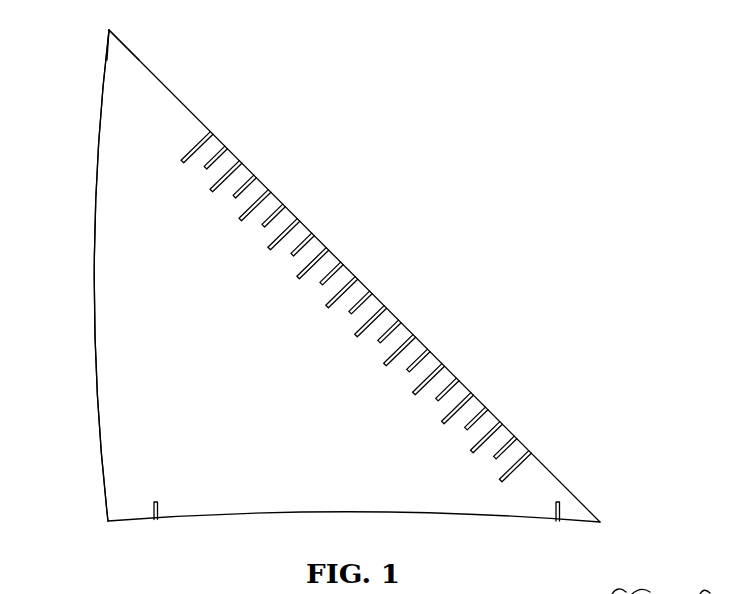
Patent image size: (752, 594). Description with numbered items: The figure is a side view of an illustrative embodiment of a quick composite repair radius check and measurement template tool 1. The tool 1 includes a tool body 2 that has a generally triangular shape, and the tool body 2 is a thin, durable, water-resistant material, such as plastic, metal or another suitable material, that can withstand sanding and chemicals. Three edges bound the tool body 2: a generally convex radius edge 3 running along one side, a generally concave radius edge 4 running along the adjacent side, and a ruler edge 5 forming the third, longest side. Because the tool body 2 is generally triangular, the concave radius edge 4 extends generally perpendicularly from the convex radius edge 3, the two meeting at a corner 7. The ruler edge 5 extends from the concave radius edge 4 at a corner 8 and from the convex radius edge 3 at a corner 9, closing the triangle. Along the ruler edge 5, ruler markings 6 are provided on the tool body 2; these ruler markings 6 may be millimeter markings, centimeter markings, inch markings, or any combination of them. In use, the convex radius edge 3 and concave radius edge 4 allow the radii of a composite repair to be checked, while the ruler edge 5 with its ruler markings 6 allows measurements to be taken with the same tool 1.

The quick composite repair template tool 1 is at (325, 118).
The tool body 2 is at (103, 473).
The convex radius edge 3 is at (95, 193).
The concave radius edge 4 is at (277, 513).
The ruler edge 5 is at (362, 283).
The ruler markings 6 is at (326, 308).
The corner 7 is at (108, 521).
The corner 8 is at (600, 522).
The corner 9 is at (109, 30).